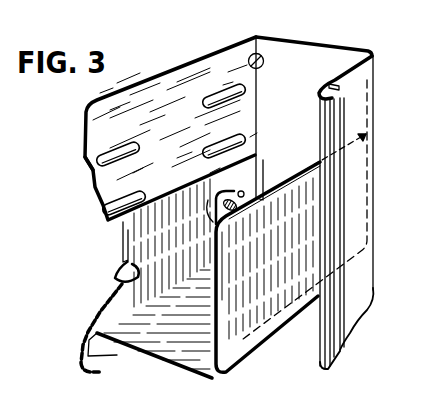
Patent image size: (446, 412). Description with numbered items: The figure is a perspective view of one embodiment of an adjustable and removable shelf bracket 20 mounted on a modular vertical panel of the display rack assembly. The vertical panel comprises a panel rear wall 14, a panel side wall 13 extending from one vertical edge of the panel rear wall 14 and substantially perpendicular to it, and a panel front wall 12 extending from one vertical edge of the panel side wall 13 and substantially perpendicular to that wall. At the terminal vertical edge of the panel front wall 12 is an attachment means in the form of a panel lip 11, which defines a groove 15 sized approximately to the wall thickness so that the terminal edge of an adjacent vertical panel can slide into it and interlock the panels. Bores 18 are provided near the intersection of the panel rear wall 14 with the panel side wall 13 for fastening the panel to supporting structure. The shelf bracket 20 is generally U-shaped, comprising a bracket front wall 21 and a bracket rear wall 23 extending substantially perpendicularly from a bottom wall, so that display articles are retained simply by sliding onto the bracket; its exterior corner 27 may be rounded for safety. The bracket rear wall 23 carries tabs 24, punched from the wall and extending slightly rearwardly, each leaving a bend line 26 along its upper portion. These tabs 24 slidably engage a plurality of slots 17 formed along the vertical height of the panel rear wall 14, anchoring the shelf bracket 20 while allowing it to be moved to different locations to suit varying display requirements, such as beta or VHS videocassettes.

The panel lip 11 is at (340, 112).
The panel front wall 12 is at (357, 123).
The panel side wall 13 is at (321, 61).
The panel rear wall 14 is at (191, 75).
The groove 15 is at (348, 78).
The slots 17 is at (94, 184).
The bores 18 is at (248, 58).
The shelf bracket 20 is at (240, 329).
The bracket front wall 21 is at (283, 299).
The bracket rear wall 23 is at (142, 240).
The tabs 24 is at (115, 277).
The bend line 26 is at (222, 198).
The exterior corner 27 is at (227, 237).